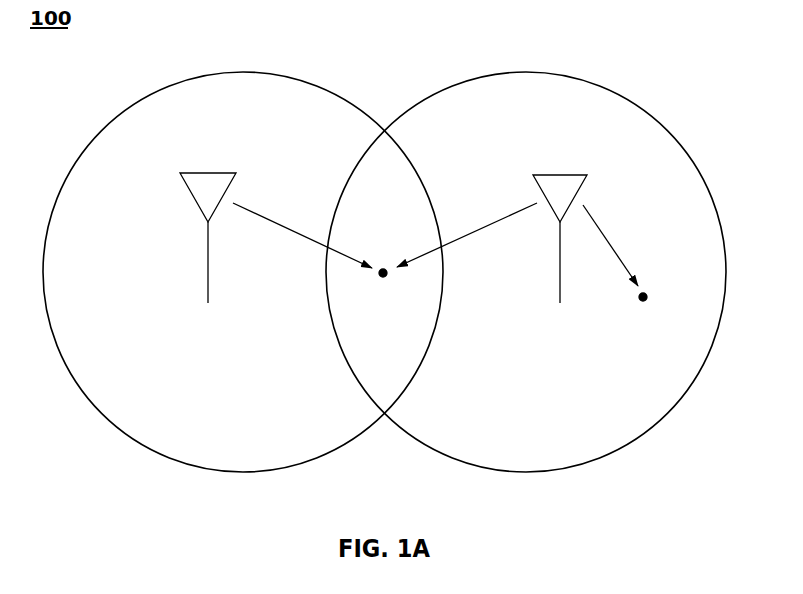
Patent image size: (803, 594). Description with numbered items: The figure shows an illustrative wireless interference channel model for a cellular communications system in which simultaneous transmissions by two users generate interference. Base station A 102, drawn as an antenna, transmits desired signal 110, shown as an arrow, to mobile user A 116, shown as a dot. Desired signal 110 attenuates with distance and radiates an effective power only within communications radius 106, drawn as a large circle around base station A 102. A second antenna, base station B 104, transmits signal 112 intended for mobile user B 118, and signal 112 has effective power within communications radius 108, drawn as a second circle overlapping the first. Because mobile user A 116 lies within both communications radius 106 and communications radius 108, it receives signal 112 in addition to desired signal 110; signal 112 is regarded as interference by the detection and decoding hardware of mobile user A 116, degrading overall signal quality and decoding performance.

The base station A 102 is at (208, 173).
The base station B 104 is at (560, 175).
The communications radius A 106 is at (240, 72).
The communications radius 108 is at (523, 72).
The desired signal 110 is at (279, 226).
The signal 112 is at (474, 236).
The mobile user A 116 is at (384, 306).
The mobile user B 118 is at (643, 332).